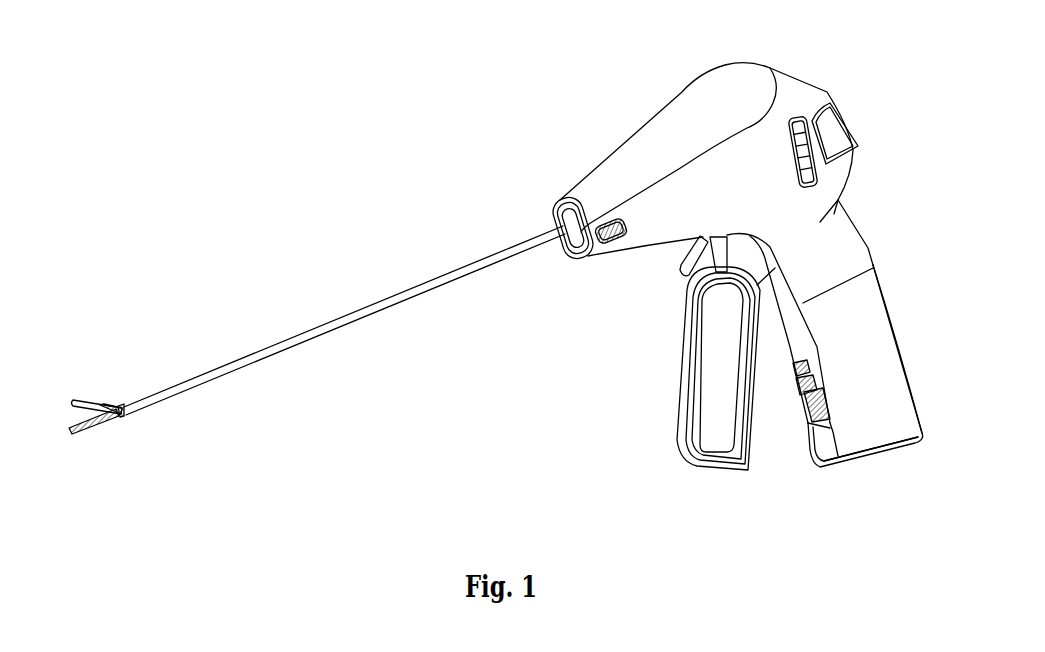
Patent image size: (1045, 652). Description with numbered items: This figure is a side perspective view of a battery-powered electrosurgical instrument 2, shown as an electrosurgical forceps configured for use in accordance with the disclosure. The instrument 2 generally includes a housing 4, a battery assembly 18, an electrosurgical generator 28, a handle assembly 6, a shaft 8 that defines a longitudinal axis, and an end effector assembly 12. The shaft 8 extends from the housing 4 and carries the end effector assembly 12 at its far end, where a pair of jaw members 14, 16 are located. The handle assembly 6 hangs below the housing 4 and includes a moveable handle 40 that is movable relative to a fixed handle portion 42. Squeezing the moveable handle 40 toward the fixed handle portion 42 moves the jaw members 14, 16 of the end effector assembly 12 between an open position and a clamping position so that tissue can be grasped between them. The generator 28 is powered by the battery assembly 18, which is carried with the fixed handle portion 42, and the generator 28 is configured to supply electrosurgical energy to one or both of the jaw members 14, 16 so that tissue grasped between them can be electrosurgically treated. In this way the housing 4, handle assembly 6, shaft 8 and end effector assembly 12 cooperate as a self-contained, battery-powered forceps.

The electrosurgical instrument 2 is at (430, 223).
The housing 4 is at (758, 42).
The handle assembly 6 is at (825, 493).
The shaft 8 is at (273, 347).
The end effector assembly 12 is at (80, 367).
The jaw member 14 is at (83, 400).
The jaw member 16 is at (73, 437).
The battery assembly 18 is at (907, 394).
The electrosurgical generator 28 is at (665, 120).
The moveable handle 40 is at (682, 423).
The fixed handle portion 42 is at (848, 240).